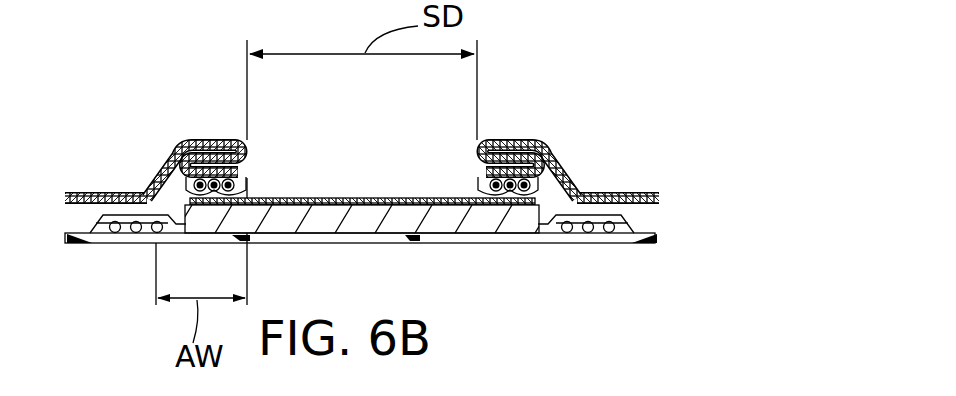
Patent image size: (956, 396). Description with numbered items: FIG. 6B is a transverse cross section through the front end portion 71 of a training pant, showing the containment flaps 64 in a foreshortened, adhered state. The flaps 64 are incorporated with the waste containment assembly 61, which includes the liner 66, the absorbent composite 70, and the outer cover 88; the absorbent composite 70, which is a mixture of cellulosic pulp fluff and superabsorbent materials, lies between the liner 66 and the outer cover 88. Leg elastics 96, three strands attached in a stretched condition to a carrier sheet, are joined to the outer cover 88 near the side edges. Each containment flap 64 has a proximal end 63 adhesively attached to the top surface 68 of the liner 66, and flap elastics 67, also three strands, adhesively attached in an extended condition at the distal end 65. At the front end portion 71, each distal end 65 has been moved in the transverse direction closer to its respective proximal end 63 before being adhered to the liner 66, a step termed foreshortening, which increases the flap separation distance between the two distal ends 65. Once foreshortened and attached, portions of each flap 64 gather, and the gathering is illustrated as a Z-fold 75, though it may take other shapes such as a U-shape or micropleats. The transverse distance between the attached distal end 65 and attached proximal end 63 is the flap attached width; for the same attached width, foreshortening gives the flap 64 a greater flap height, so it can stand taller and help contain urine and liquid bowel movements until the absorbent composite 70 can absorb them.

The waste containment assembly 61 is at (394, 119).
The proximal end 63 is at (150, 192).
The containment flap 64 is at (178, 158).
The distal end 65 is at (240, 142).
The liner 66 is at (368, 198).
The flap elastics 67 is at (200, 190).
The top surface 68 is at (440, 198).
The absorbent composite 70 is at (363, 192).
The front end portion 71 is at (382, 175).
The Z-fold 75 is at (232, 140).
The outer cover 88 is at (370, 243).
The leg elastic 96 is at (118, 233).